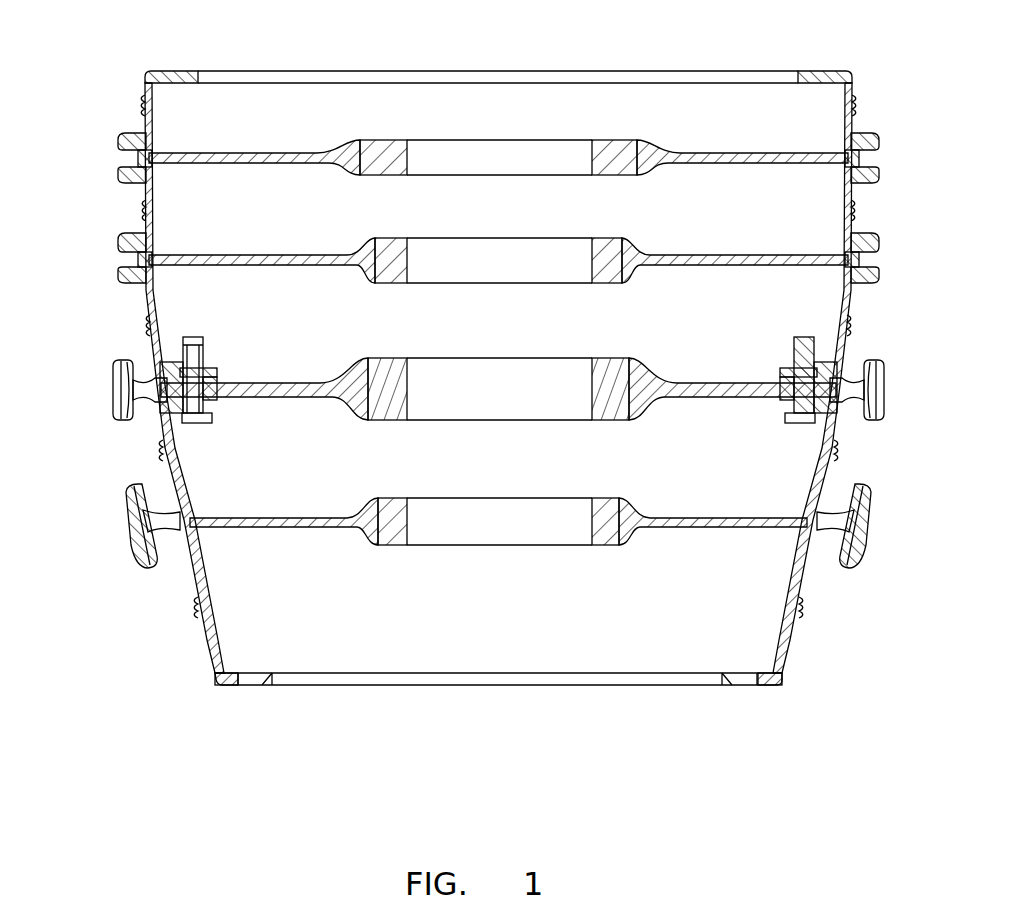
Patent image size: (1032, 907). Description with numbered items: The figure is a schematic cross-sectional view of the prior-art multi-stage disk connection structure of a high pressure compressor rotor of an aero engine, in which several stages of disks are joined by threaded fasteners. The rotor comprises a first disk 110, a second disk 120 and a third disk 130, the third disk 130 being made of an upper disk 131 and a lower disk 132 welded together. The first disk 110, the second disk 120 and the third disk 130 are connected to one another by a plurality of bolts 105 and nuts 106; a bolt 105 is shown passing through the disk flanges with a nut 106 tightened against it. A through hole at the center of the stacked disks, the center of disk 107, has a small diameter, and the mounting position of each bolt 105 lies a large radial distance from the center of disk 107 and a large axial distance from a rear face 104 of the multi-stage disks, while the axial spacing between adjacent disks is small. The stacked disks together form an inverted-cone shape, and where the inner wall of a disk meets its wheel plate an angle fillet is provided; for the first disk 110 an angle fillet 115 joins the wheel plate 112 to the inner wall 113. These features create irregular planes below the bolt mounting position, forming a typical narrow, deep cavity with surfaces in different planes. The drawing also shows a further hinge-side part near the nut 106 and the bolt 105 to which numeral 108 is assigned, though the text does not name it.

The rear face 104 is at (167, 70).
The center of disk 107 is at (428, 157).
The third disk 130 is at (610, 255).
The upper disk 131 is at (873, 143).
The lower disk 132 is at (850, 253).
The second disk 120 is at (610, 373).
The first disk 110 is at (613, 520).
The nut 106 is at (172, 363).
The hinge nut 108 is at (185, 393).
The bolt 105 is at (190, 400).
The inner wall 113 is at (187, 517).
The angle fillet 115 is at (190, 523).
The wheel plate 112 is at (237, 520).